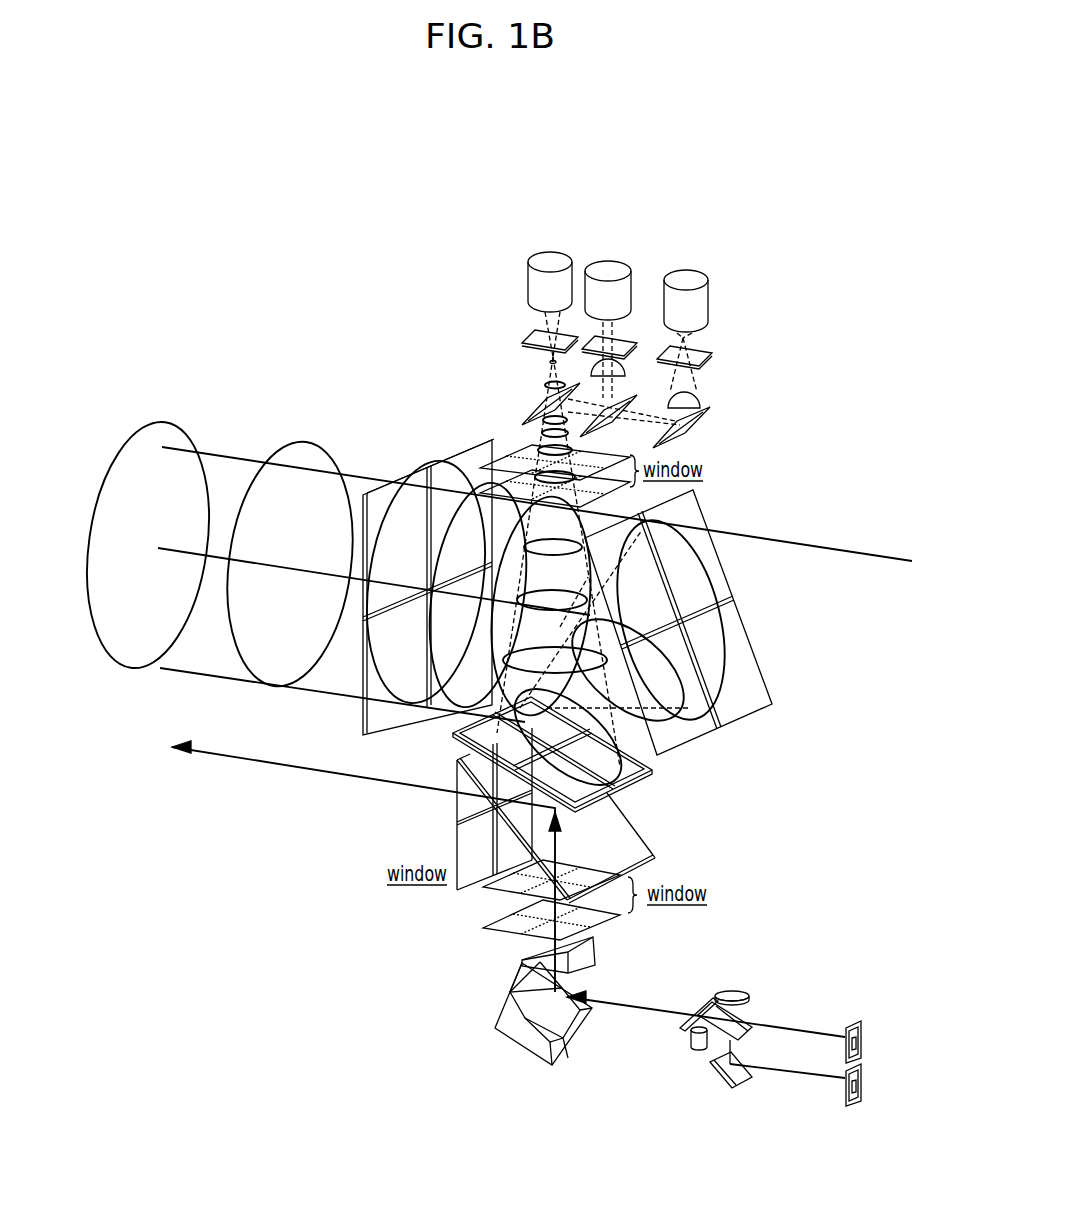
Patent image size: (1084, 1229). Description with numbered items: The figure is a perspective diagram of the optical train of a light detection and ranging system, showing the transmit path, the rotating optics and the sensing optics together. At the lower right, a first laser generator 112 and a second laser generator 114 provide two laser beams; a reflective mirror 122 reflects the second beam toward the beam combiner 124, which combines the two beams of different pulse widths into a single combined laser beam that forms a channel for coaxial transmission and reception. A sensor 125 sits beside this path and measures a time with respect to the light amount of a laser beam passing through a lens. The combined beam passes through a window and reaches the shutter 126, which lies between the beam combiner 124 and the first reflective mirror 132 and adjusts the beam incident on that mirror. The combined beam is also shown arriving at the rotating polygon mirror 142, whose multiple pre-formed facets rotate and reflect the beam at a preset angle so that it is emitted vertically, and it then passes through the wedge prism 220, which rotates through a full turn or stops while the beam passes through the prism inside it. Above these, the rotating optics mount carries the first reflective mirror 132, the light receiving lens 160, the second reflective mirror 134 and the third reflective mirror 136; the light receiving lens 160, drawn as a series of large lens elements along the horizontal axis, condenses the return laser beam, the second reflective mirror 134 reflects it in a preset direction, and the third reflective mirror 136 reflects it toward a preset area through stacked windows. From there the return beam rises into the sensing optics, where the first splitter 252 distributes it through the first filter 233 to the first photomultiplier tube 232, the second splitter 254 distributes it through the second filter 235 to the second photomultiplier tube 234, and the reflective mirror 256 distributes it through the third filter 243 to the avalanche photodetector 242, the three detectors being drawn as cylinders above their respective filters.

The first laser generator 112 is at (906, 1049).
The second laser generator 114 is at (906, 1090).
The reflective mirror 122 is at (791, 1104).
The beam combiner 124 is at (791, 1055).
The sensor 125 is at (698, 1081).
The shutter 126 is at (696, 1004).
The first reflective mirror 132 is at (688, 834).
The second reflective mirror 134 is at (784, 622).
The third reflective mirror 136 is at (448, 740).
The rotating polygon mirror 142 is at (469, 1022).
The light receiving lens 160 is at (448, 452).
The wedge prism 220 is at (509, 965).
The first photomultiplier tube (PMT1) 232 is at (569, 247).
The first filter 233 is at (516, 349).
The second photomultiplier tube (PMT2) 234 is at (626, 252).
The second filter 235 is at (661, 337).
The avalanche photodetector (APD) 242 is at (704, 264).
The third filter 243 is at (739, 347).
The first splitter 252 is at (521, 419).
The second splitter 254 is at (643, 449).
The reflective mirror 256 is at (729, 455).